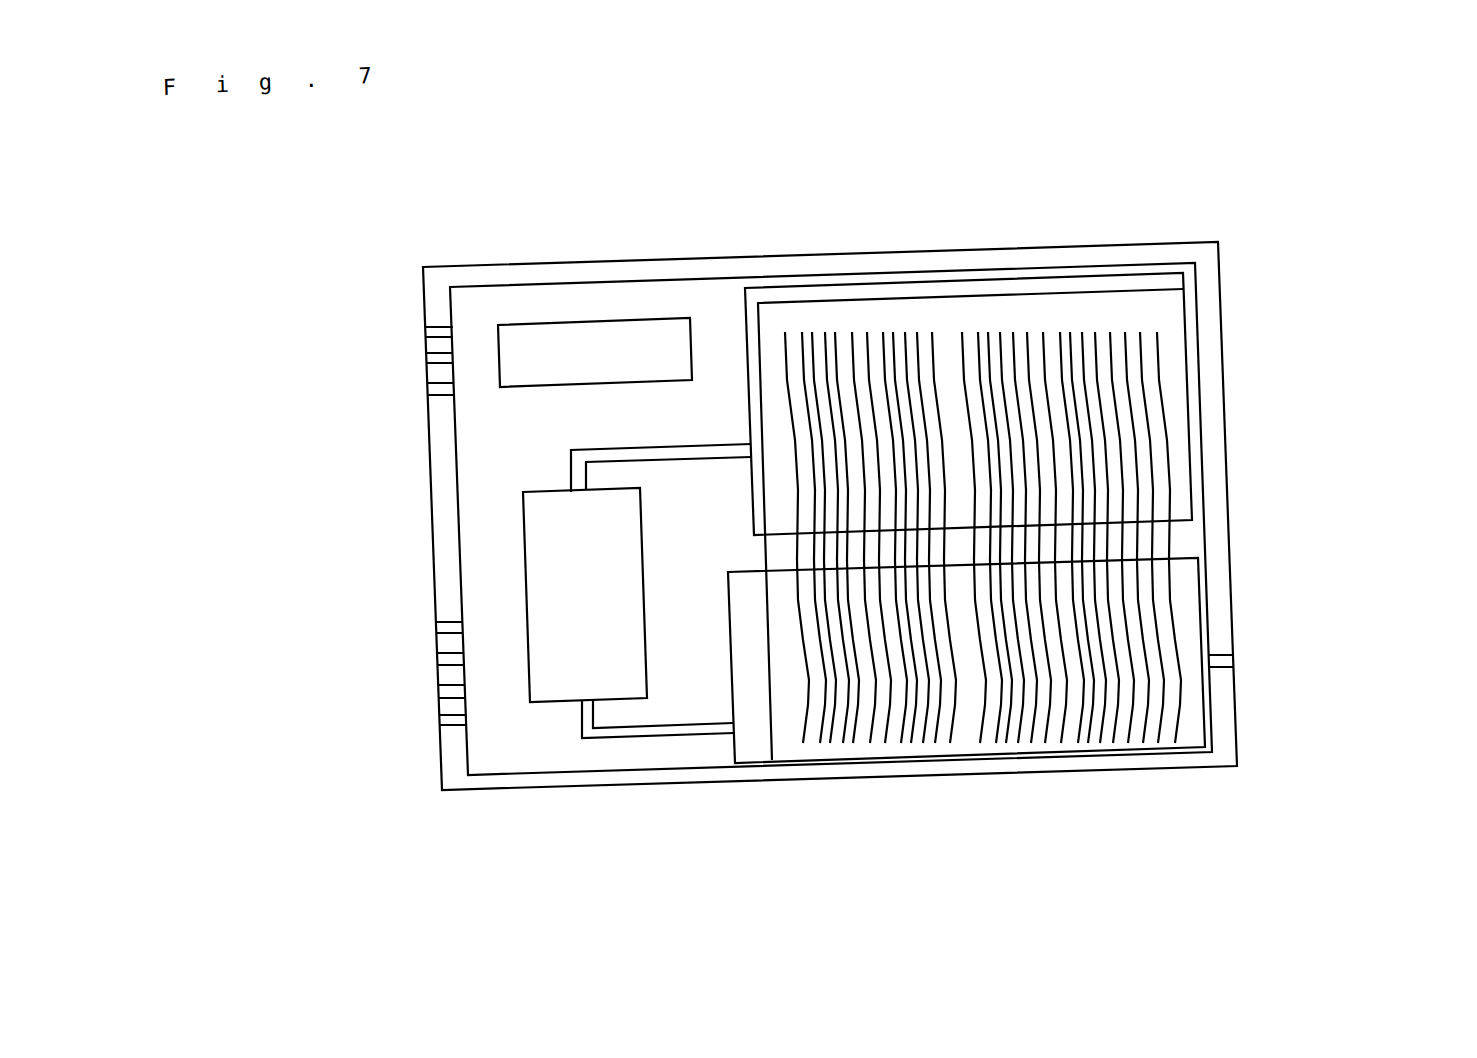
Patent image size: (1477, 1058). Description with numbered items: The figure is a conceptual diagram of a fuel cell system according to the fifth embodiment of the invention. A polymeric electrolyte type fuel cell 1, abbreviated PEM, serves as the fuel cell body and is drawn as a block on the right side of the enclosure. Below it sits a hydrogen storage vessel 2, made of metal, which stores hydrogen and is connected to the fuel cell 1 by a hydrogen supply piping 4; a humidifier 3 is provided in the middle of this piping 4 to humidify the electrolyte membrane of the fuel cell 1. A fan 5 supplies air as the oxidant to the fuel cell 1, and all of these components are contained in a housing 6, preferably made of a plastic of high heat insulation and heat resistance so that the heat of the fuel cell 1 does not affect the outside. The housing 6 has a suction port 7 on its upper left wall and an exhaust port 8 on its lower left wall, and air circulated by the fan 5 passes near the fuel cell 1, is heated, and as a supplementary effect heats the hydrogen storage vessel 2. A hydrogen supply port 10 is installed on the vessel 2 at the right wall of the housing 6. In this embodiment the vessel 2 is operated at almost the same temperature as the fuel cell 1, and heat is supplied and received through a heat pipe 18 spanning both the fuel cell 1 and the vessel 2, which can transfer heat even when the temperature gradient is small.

The polymeric electrolyte type fuel cell 1 is at (1018, 232).
The hydrogen storage vessel 2 is at (745, 732).
The humidifier 3 is at (585, 595).
The hydrogen supply piping 4 is at (607, 737).
The fan 5 is at (595, 352).
The housing 6 is at (642, 232).
The suction port 7 is at (427, 367).
The exhaust port 8 is at (437, 696).
The hydrogen supply port 10 is at (1235, 670).
The heat pipe 18 is at (1078, 318).